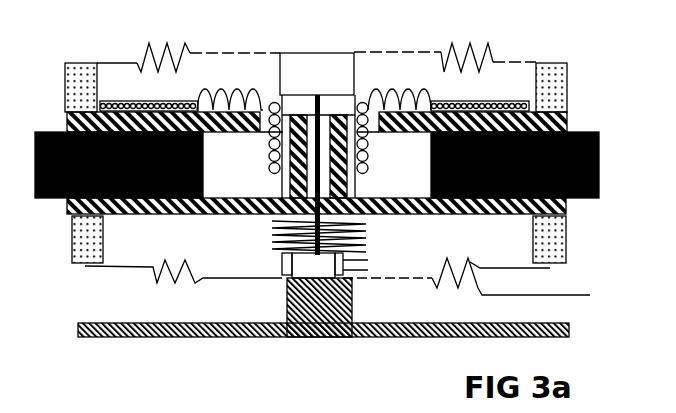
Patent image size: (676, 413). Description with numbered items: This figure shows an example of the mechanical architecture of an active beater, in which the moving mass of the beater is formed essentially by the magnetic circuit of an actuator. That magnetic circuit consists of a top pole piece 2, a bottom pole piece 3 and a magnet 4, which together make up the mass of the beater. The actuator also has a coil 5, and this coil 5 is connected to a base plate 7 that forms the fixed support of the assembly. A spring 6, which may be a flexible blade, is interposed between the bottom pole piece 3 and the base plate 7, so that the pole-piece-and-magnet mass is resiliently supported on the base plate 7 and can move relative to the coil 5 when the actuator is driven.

The top pole piece 2 is at (80, 108).
The bottom pole piece 3 is at (212, 215).
The magnet 4 is at (569, 131).
The coil 5 is at (374, 156).
The spring 6 is at (275, 252).
The base plate 7 is at (321, 339).